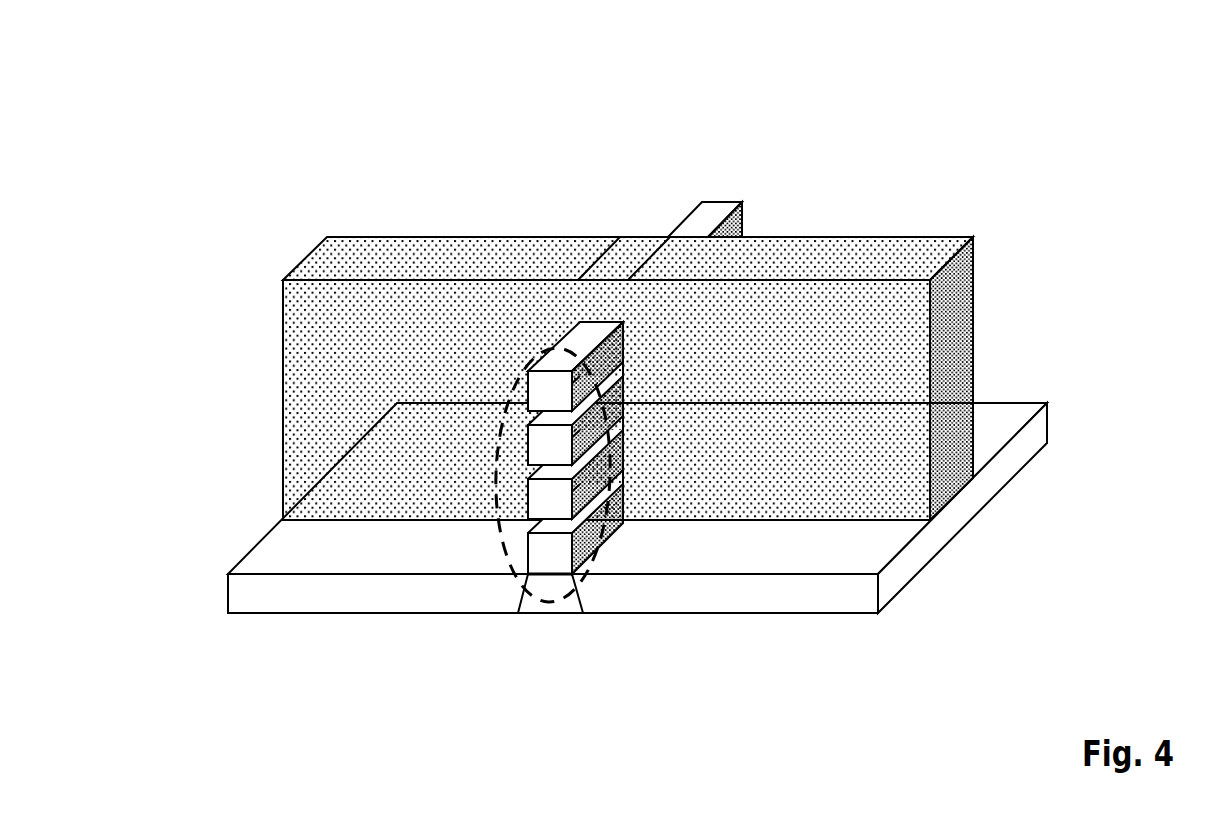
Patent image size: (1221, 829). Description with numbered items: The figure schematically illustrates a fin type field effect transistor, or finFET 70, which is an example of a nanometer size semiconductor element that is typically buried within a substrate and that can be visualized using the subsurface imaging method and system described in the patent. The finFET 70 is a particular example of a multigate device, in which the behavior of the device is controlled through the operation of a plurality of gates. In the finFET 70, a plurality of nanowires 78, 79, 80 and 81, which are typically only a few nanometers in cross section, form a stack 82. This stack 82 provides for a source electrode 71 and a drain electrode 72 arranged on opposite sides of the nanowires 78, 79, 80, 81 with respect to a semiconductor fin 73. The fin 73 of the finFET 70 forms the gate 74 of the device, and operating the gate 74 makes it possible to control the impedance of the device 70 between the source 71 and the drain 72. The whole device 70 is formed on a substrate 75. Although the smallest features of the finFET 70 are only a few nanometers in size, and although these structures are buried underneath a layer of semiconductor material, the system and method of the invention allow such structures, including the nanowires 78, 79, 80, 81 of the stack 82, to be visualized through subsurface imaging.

The fin type field effect transistor (finFET) 70 is at (209, 220).
The source electrode 71 is at (474, 418).
The drain electrode 72 is at (826, 208).
The semiconductor fin 73 is at (468, 245).
The gate 74 is at (585, 196).
The substrate 75 is at (820, 600).
The nanowire 78 is at (712, 208).
The nanowire 79 is at (553, 441).
The nanowire 80 is at (553, 497).
The nanowire 81 is at (553, 549).
The stack 82 is at (597, 558).